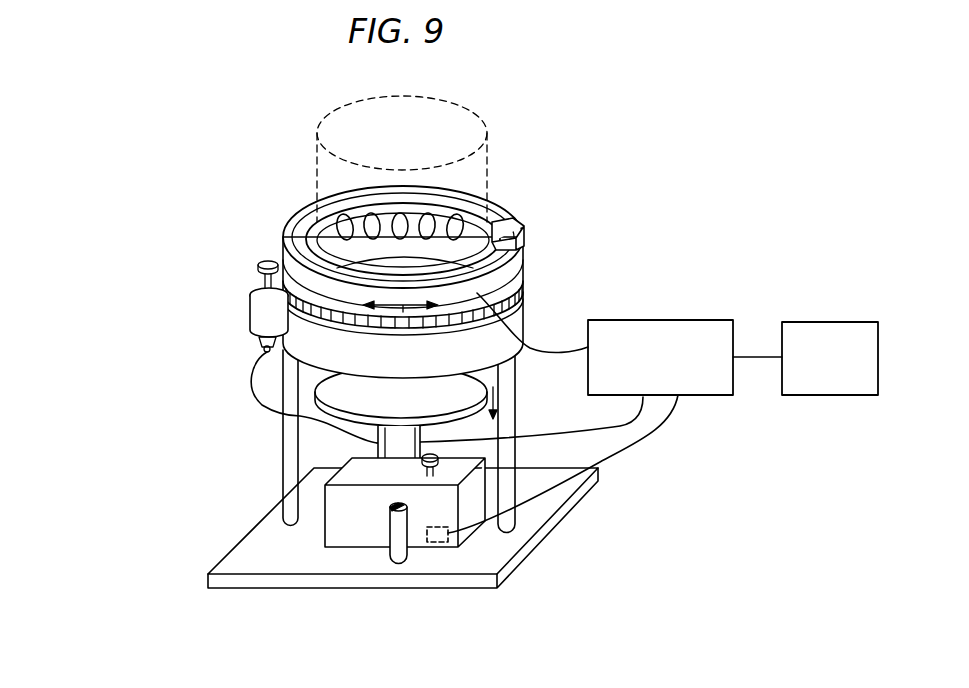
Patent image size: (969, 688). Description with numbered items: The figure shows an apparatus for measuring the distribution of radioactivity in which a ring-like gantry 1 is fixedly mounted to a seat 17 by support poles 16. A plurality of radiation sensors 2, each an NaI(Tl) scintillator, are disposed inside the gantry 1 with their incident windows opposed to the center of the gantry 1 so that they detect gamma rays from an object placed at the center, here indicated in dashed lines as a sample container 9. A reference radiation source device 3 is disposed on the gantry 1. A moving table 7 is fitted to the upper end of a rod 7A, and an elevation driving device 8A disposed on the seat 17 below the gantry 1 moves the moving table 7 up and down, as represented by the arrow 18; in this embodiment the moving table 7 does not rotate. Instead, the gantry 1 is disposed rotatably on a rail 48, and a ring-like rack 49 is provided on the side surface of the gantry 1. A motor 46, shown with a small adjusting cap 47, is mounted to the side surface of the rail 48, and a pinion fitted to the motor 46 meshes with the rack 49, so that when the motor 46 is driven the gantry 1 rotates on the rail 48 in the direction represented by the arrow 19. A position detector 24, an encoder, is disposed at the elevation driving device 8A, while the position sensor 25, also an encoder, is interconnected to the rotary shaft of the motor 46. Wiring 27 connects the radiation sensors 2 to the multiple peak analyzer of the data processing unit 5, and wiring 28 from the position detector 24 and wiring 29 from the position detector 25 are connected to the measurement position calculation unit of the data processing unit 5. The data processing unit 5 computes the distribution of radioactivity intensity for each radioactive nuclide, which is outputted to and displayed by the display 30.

The gantry 1 is at (295, 227).
The radiation sensor 2 is at (338, 232).
The reference radiation source device 3 is at (513, 230).
The data processing unit 5 is at (686, 320).
The moving table 7 is at (325, 403).
The rod 7A is at (385, 455).
The elevation driving device 8A is at (360, 518).
The sample container 9 is at (333, 122).
The support pole 16 is at (283, 462).
The seat 17 is at (538, 514).
The arrow 18 is at (502, 398).
The arrow 19 is at (403, 312).
The position detector 24 is at (437, 542).
The position detector 25 is at (258, 357).
The wiring 27 is at (540, 351).
The wiring 28 is at (648, 434).
The wiring 29 is at (622, 420).
The display 30 is at (838, 322).
The motor 46 is at (254, 310).
The adjusting screw 47 is at (258, 265).
The rail 48 is at (517, 320).
The rack 49 is at (523, 288).